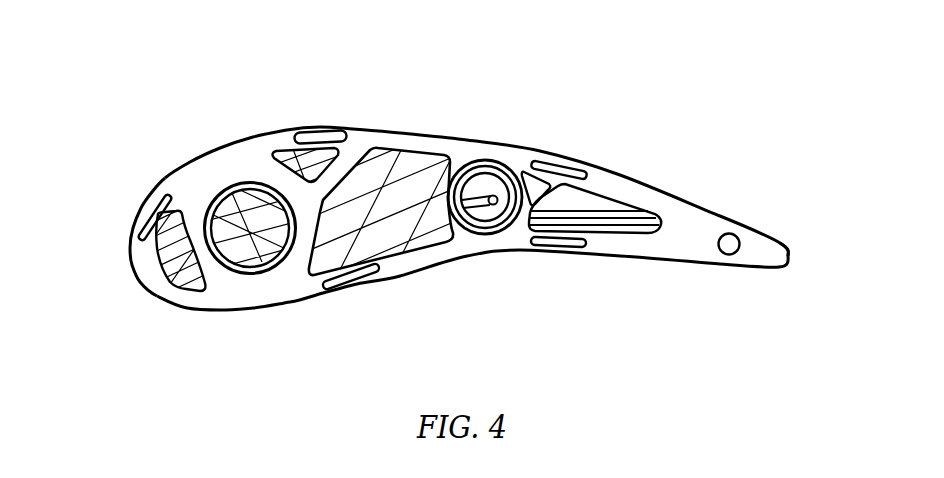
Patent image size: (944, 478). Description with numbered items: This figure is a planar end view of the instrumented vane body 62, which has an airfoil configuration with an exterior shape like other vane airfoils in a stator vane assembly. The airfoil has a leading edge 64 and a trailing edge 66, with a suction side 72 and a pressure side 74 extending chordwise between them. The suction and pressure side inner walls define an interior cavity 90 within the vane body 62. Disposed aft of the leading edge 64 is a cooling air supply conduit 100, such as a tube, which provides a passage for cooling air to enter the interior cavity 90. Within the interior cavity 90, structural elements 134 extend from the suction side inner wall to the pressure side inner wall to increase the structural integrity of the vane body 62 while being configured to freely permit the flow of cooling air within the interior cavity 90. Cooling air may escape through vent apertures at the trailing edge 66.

The instrumented vane body 62 is at (461, 199).
The leading edge 64 is at (129, 262).
The trailing edge 66 is at (788, 259).
The suction side 72 is at (473, 99).
The pressure side 74 is at (465, 278).
The interior cavity 90 is at (355, 258).
The cooling air supply conduit 100 is at (251, 293).
The structural elements 134 is at (406, 182).